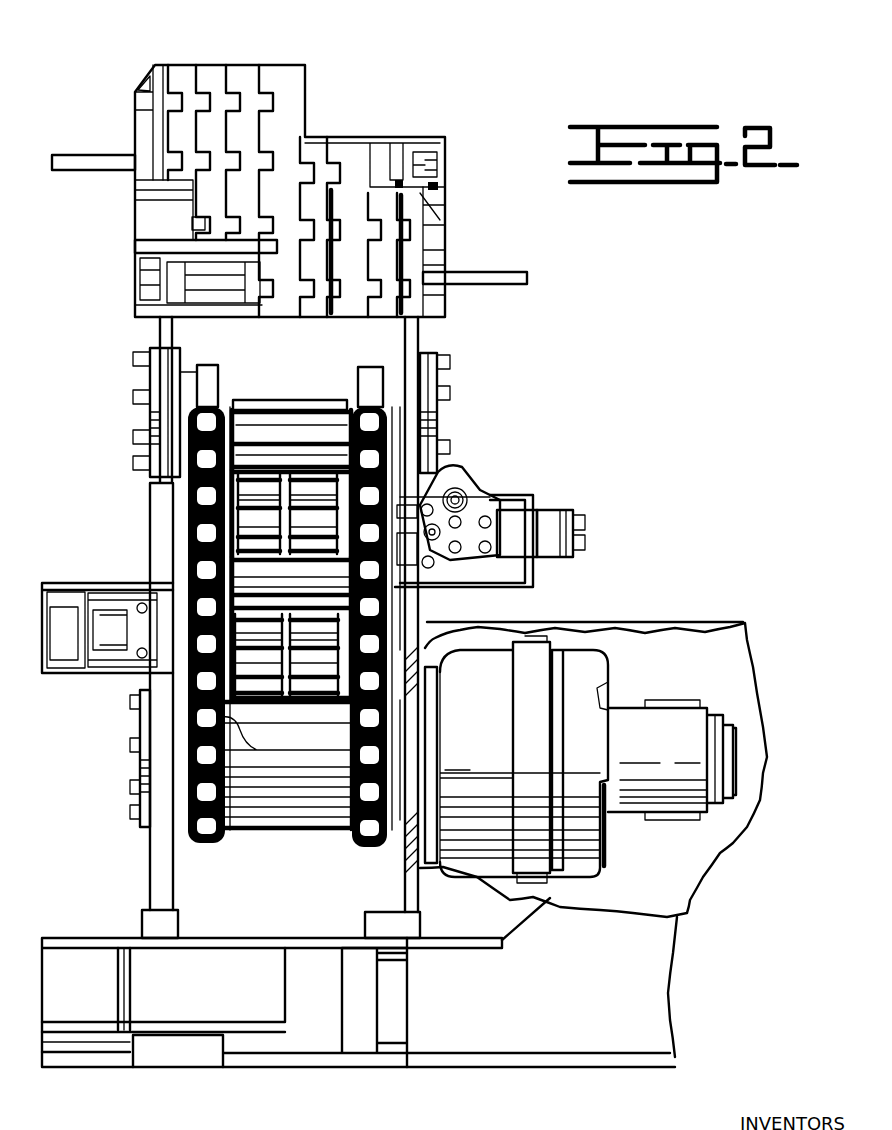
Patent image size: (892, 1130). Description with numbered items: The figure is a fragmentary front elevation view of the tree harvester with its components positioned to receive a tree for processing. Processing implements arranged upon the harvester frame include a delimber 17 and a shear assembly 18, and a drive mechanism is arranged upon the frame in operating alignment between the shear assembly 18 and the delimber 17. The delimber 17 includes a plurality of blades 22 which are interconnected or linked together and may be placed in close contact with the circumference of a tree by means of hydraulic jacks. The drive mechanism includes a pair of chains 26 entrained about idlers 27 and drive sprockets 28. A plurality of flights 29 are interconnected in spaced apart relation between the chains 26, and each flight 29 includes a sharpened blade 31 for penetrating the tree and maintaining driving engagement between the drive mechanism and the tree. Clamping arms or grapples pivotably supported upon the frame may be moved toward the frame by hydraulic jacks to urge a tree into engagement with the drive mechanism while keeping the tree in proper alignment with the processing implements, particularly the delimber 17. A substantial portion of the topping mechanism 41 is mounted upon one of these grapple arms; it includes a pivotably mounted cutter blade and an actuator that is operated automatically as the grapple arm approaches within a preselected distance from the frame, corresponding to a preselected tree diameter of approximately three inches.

The delimber 17 is at (392, 120).
The shear assembly 18 is at (275, 1070).
The blades 22 is at (200, 73).
The chains 26 is at (175, 510).
The idlers 27 is at (210, 382).
The drive sprockets 28 is at (207, 833).
The flights 29 is at (310, 417).
The sharpened blade 31 is at (270, 437).
The topping mechanism 41 is at (547, 490).